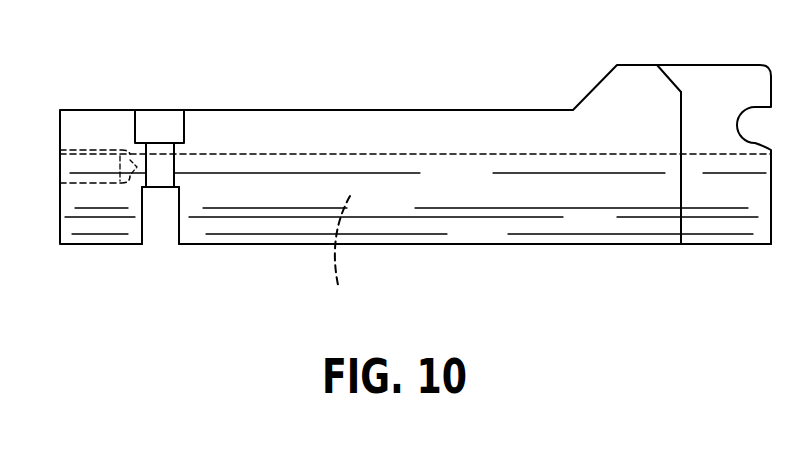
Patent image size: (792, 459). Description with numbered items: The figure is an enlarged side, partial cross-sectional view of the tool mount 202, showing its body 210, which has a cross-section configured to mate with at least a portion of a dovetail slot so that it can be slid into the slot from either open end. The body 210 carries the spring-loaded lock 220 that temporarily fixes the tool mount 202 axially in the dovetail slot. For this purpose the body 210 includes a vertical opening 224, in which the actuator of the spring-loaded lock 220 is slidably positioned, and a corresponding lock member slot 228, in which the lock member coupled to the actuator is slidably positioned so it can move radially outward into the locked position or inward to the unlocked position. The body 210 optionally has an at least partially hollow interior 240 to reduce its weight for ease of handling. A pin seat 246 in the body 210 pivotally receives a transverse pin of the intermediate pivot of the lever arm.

The tool mount 202 is at (448, 103).
The body 210 is at (423, 229).
The spring-loaded lock 220 is at (524, 321).
The vertical opening 224 is at (135, 127).
The lock member slot 228 is at (177, 229).
The at least partially hollow interior 240 is at (329, 257).
The pin seat 246 is at (708, 125).